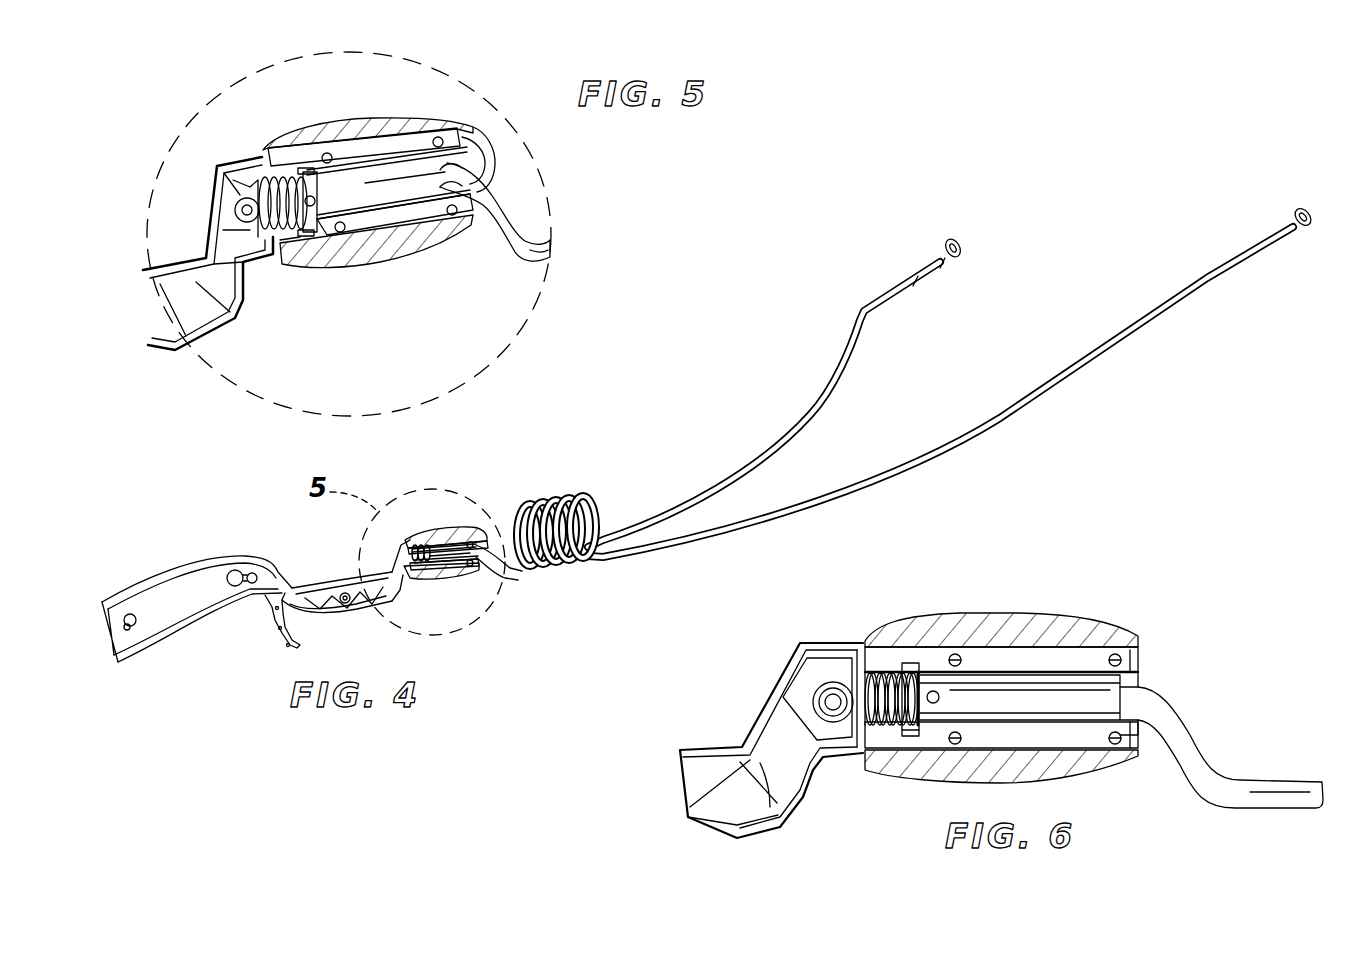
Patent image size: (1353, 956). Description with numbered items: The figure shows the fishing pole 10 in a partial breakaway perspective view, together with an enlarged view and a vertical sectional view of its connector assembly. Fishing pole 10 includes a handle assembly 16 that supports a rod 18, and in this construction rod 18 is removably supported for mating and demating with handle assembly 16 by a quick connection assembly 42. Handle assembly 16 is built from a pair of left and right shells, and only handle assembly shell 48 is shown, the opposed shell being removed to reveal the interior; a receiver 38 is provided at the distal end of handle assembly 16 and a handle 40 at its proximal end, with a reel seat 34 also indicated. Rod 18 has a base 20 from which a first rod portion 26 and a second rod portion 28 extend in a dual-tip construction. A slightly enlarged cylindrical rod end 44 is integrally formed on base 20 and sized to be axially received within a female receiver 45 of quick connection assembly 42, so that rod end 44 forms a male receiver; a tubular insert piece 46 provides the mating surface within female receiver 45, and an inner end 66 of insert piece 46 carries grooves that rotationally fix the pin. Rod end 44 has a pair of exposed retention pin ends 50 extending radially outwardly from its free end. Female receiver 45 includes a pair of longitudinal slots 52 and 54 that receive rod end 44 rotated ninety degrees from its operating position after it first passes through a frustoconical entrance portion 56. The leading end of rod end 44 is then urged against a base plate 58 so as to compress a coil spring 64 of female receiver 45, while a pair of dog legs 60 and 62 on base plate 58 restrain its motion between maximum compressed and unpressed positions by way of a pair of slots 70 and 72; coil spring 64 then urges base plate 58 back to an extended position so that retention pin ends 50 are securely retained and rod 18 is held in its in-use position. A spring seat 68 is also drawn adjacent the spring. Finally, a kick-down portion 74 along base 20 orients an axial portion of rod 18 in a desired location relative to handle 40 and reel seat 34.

In FIG. 5, the fishing pole 10 is at (460, 360).
In FIG. 4, the fishing pole 10 is at (674, 448).
In FIG. 6, the fishing pole 10 is at (1195, 548).
In FIG. 5, the handle assembly 16 is at (247, 280).
In FIG. 4, the handle assembly 16 is at (266, 639).
In FIG. 6, the handle assembly 16 is at (774, 731).
In FIG. 5, the rod 18 is at (508, 253).
In FIG. 4, the rod 18 is at (895, 404).
In FIG. 6, the rod 18 is at (1232, 769).
In FIG. 5, the base 20 is at (518, 252).
In FIG. 4, the base 20 is at (514, 572).
In FIG. 6, the base 20 is at (1266, 785).
In FIG. 4, the first rod portion 26 is at (953, 444).
In FIG. 4, the second rod portion 28 is at (810, 407).
In FIG. 4, the reel seat 34 is at (356, 580).
In FIG. 5, the receiver 38 is at (345, 128).
In FIG. 4, the receiver 38 is at (416, 528).
In FIG. 6, the receiver 38 is at (1026, 612).
In FIG. 4, the handle 40 is at (196, 566).
In FIG. 5, the quick connection assembly 42 is at (395, 200).
In FIG. 4, the quick connection assembly 42 is at (445, 558).
In FIG. 6, the quick connection assembly 42 is at (1033, 681).
In FIG. 5, the rod end 44 is at (394, 205).
In FIG. 4, the rod end 44 is at (440, 560).
In FIG. 6, the rod end 44 is at (1030, 702).
In FIG. 5, the female receiver 45 is at (368, 168).
In FIG. 4, the female receiver 45 is at (450, 548).
In FIG. 6, the female receiver 45 is at (1055, 682).
In FIG. 5, the insert piece 46 is at (405, 170).
In FIG. 6, the insert piece 46 is at (1046, 760).
In FIG. 4, the handle assembly shell 48 is at (182, 600).
In FIG. 5, the retention pin ends 50 is at (350, 210).
In FIG. 6, the retention pin ends 50 is at (941, 697).
In FIG. 5, the longitudinal slot 52 is at (425, 118).
In FIG. 6, the longitudinal slot 52 is at (1102, 686).
In FIG. 5, the longitudinal slot 54 is at (440, 238).
In FIG. 6, the longitudinal slot 54 is at (1070, 775).
In FIG. 5, the frustoconical entrance portion 56 is at (500, 143).
In FIG. 6, the frustoconical entrance portion 56 is at (1142, 685).
In FIG. 5, the base plate 58 is at (313, 138).
In FIG. 6, the base plate 58 is at (908, 665).
In FIG. 5, the dog leg 60 is at (298, 139).
In FIG. 5, the dog leg 62 is at (312, 240).
In FIG. 5, the coil spring 64 is at (216, 172).
In FIG. 6, the coil spring 64 is at (858, 642).
In FIG. 6, the inner end 66 is at (925, 668).
In FIG. 5, the spring seat 68 is at (280, 244).
In FIG. 6, the spring seat 68 is at (880, 728).
In FIG. 5, the slot 70 is at (264, 152).
In FIG. 6, the slot 70 is at (888, 680).
In FIG. 5, the slot 72 is at (306, 235).
In FIG. 6, the slot 72 is at (908, 737).
In FIG. 5, the kick-down portion 74 is at (512, 216).
In FIG. 6, the kick-down portion 74 is at (1192, 726).